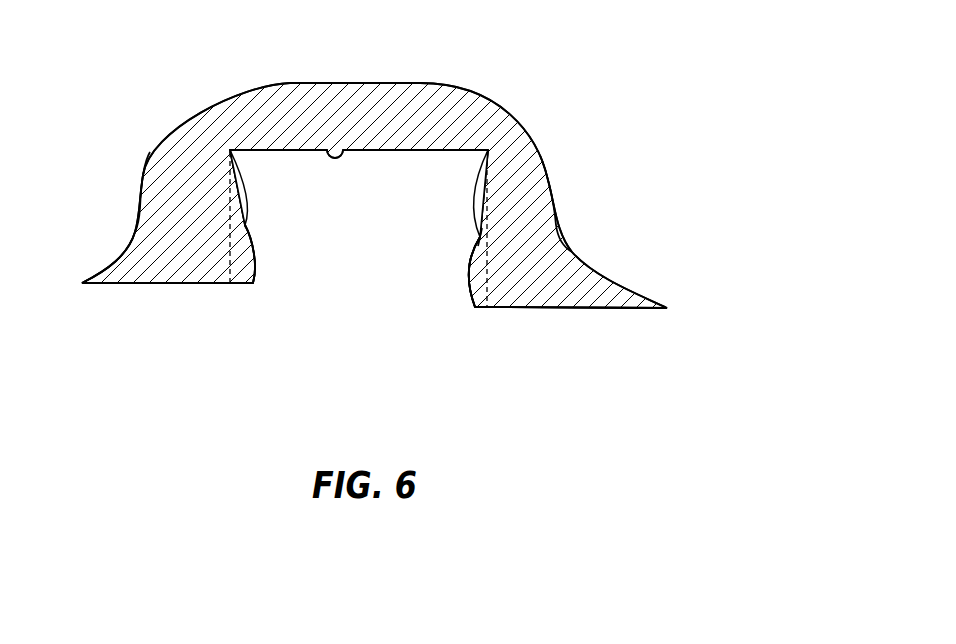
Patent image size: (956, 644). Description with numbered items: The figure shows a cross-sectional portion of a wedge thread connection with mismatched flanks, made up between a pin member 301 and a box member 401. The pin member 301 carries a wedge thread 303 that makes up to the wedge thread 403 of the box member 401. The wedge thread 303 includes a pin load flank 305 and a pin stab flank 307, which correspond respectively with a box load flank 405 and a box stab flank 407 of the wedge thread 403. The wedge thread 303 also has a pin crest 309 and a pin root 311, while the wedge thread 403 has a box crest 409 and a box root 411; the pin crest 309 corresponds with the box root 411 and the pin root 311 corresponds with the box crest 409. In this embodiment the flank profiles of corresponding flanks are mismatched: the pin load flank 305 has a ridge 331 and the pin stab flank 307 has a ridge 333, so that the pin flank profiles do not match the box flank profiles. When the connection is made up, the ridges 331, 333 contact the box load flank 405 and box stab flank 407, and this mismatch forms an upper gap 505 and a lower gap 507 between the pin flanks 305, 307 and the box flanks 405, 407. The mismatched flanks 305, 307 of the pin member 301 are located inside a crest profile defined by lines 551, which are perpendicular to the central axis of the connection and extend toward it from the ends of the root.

The pin member 301 is at (100, 397).
The wedge thread 303 is at (435, 199).
The pin load flank 305 is at (248, 192).
The pin stab flank 307 is at (468, 287).
The pin crest 309 is at (337, 147).
The pin root 311 is at (143, 284).
The ridge 331 is at (244, 225).
The ridge 333 is at (483, 239).
The box member 401 is at (660, 259).
The wedge thread 403 is at (108, 199).
The box load flank 405 is at (233, 198).
The box stab flank 407 is at (485, 265).
The box crest 409 is at (123, 278).
The box root 411 is at (290, 147).
The upper gap 505 is at (491, 183).
The lower gap 507 is at (491, 265).
The lines 551 is at (223, 284).